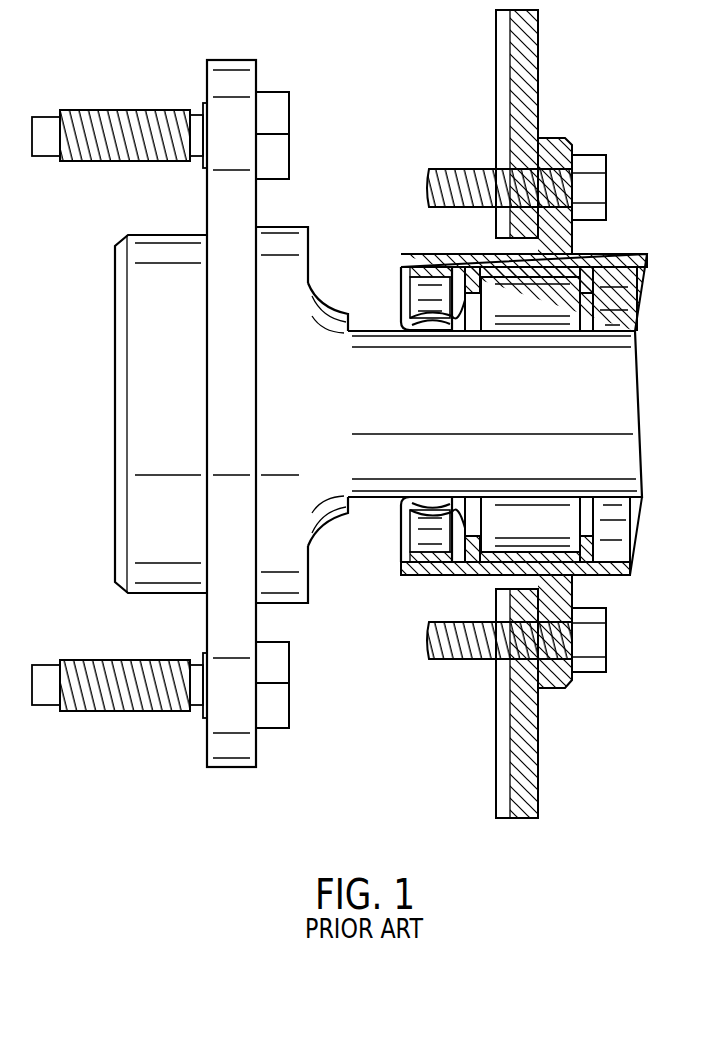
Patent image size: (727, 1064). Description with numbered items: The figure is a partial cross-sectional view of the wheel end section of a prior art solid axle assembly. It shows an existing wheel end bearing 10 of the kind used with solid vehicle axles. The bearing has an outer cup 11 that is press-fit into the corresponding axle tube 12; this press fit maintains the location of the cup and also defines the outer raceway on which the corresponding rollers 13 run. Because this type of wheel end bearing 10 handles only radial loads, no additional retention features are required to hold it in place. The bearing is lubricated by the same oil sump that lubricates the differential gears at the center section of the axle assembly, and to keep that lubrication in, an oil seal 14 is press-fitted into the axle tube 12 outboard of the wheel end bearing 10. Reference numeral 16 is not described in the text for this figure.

The wheel end bearing 10 is at (603, 305).
The outer cup 11 is at (594, 545).
The axle tube 12 is at (625, 254).
The rollers 13 is at (580, 522).
The oil seal 14 is at (400, 537).
The shaft 16 is at (521, 412).